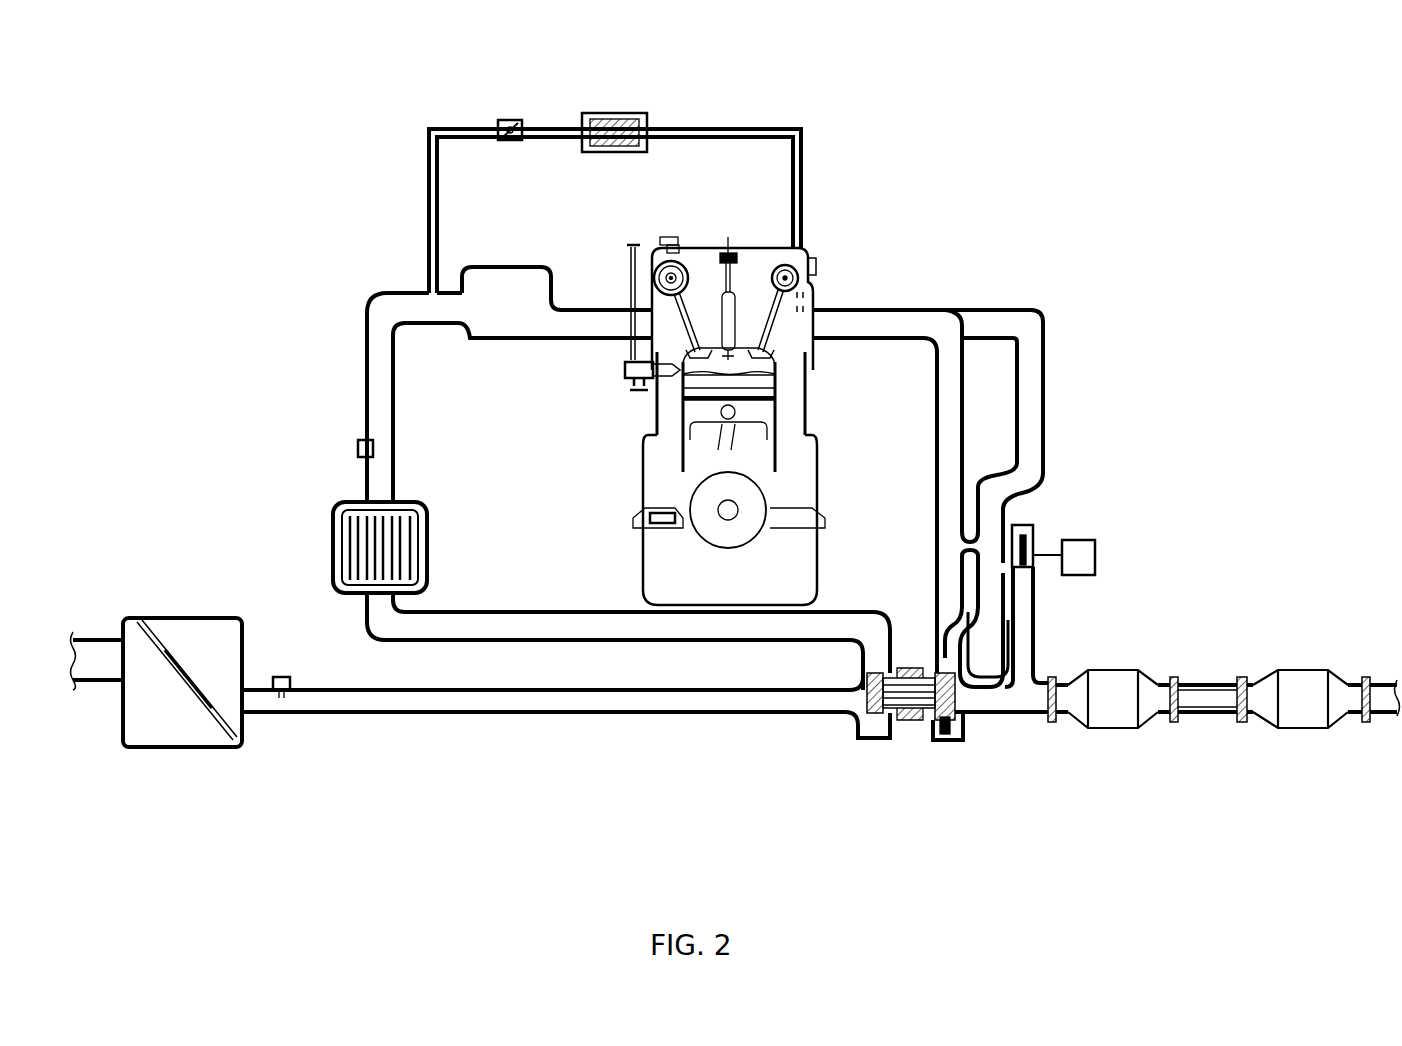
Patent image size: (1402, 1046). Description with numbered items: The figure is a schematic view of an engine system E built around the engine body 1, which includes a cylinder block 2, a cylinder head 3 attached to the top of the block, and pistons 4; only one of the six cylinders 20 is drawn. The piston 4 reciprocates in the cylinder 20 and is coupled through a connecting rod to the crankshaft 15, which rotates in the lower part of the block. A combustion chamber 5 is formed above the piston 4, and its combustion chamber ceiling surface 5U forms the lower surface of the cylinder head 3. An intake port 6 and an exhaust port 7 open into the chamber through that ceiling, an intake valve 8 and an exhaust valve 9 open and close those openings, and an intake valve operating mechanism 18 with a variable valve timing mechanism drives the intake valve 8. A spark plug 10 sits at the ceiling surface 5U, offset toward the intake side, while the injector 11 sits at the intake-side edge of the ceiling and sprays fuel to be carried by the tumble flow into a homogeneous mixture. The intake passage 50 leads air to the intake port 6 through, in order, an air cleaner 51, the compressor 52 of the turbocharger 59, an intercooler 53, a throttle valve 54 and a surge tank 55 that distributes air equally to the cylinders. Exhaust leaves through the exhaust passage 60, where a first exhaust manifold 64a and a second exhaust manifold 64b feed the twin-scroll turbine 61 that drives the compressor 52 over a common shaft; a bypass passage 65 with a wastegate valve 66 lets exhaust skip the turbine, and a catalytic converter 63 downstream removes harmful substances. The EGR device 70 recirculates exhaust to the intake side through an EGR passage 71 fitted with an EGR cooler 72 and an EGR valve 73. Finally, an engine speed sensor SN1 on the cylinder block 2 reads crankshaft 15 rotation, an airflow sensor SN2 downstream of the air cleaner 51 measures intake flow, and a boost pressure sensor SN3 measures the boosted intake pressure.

The engine body 1 is at (700, 378).
The cylinder block 2 is at (810, 472).
The cylinder head 3 is at (800, 298).
The piston 4 is at (795, 420).
The combustion chamber 5 is at (760, 386).
The combustion chamber ceiling surface 5U is at (763, 330).
The intake port 6 is at (648, 300).
The exhaust port 7 is at (797, 346).
The intake valve 8 is at (650, 350).
The exhaust valve 9 is at (790, 368).
The spark plug 10 is at (735, 340).
The injector 11 is at (665, 395).
The crankshaft 15 is at (740, 510).
The intake valve operating mechanism 18 is at (668, 262).
The cylinder 20 is at (790, 396).
The intake passage 50 is at (481, 508).
The air cleaner 51 is at (180, 748).
The compressor 52 is at (880, 720).
The intercooler 53 is at (430, 548).
The throttle valve 54 is at (566, 470).
The surge tank 55 is at (500, 268).
The turbocharger 59 is at (900, 752).
The exhaust passage 60 is at (1106, 590).
The turbine 61 is at (947, 740).
The catalytic converter 63 is at (1120, 668).
The first exhaust manifold 64a is at (968, 405).
The second exhaust manifold 64b is at (1035, 492).
The bypass passage 65 is at (1036, 622).
The wastegate valve 66 is at (1033, 528).
The EGR device 70 is at (667, 168).
The EGR passage 71 is at (706, 122).
The EGR cooler 72 is at (615, 114).
The EGR valve 73 is at (516, 120).
The engine system E is at (836, 378).
The engine speed sensor SN1 is at (650, 518).
The airflow sensor SN2 is at (280, 676).
The boost pressure sensor SN3 is at (358, 452).